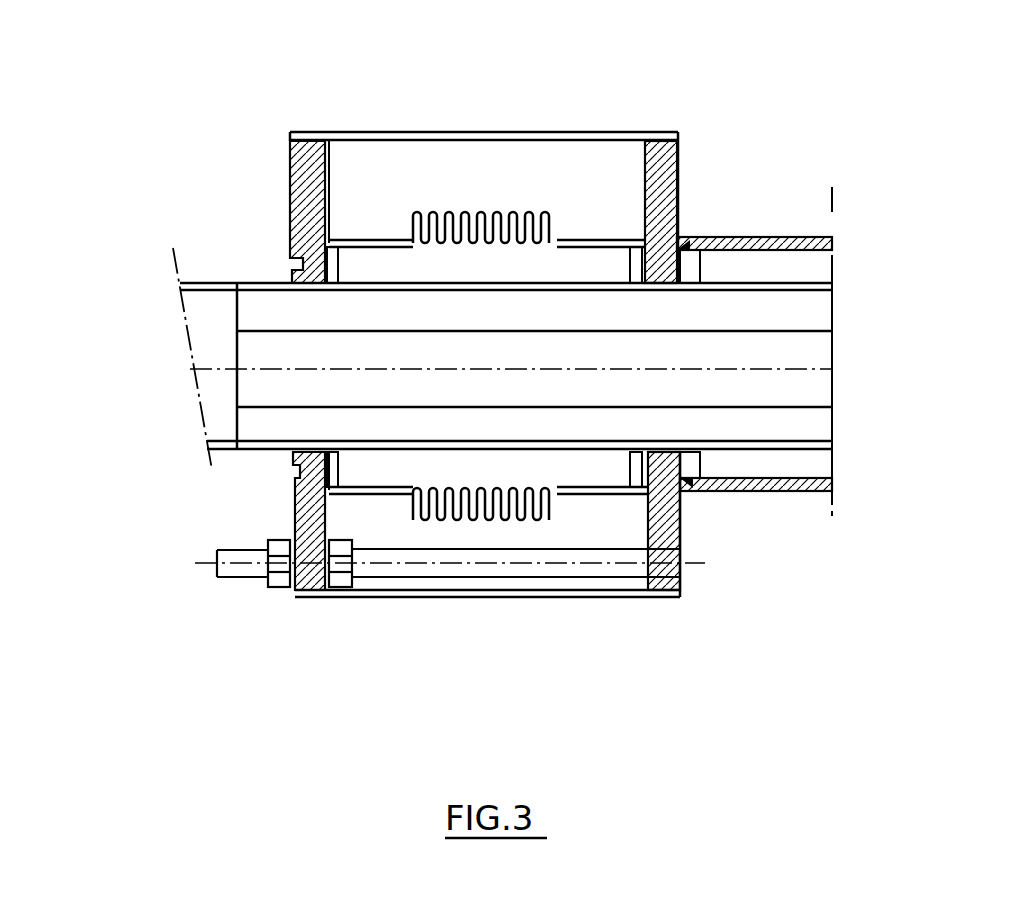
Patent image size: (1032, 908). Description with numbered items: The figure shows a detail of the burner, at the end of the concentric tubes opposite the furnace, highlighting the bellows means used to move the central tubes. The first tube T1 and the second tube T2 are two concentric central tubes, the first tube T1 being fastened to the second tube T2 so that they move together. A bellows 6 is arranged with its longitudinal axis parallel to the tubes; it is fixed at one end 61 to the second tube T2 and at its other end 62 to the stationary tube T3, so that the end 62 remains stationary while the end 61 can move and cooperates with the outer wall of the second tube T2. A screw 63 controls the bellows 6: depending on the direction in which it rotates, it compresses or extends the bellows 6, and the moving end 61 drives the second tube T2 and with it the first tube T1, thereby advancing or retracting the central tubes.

The bellows 6 is at (497, 198).
The end of the bellows 61 is at (288, 507).
The other end of the bellows 62 is at (688, 198).
The screw 63 is at (205, 577).
The first tube T1 is at (212, 400).
The second tube T2 is at (200, 296).
The stationary tube T3 is at (814, 225).